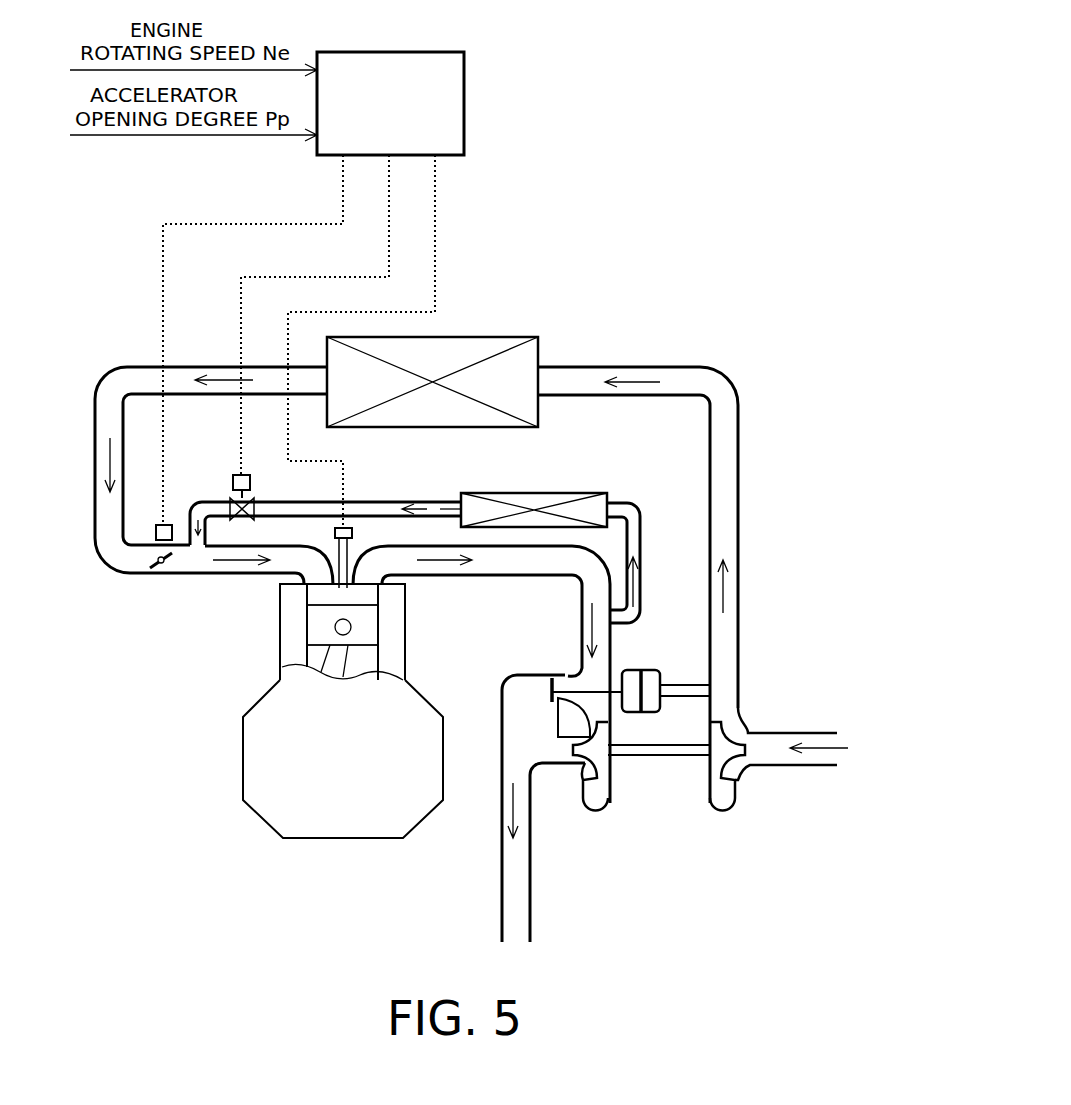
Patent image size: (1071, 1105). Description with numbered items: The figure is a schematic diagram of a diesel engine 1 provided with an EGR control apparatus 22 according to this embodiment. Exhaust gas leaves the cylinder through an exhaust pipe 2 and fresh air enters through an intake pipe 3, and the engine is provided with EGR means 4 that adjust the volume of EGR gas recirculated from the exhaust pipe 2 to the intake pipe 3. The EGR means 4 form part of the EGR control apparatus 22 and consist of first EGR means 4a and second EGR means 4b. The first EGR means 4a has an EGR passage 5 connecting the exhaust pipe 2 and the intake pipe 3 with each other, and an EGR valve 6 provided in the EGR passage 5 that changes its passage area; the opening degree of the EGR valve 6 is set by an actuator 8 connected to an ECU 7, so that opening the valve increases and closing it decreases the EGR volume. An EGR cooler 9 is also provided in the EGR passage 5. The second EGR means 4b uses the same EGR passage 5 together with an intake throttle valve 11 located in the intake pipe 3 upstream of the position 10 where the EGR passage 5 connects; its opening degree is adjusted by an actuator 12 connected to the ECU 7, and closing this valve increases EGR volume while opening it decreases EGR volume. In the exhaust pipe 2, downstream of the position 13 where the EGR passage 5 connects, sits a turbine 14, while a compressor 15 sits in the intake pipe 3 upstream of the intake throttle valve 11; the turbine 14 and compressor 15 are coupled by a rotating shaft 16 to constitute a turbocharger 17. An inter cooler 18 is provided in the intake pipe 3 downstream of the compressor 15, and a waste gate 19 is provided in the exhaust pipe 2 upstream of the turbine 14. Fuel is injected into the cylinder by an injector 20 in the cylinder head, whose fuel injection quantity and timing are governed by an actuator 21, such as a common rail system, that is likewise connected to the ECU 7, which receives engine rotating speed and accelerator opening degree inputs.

The diesel engine 1 is at (262, 755).
The exhaust pipe 2 is at (490, 577).
The intake pipe 3 is at (255, 576).
The EGR means 4 is at (188, 469).
The first EGR means 4a is at (427, 493).
The second EGR means 4b is at (103, 575).
The EGR passage 5 is at (371, 500).
The EGR valve 6 is at (233, 498).
The ECU 7 is at (432, 52).
The actuator 8 is at (252, 482).
The EGR cooler 9 is at (580, 493).
The position connected with the EGR passage 10 is at (197, 548).
The intake throttle valve 11 is at (162, 566).
The actuator 12 is at (160, 525).
The position connected with the EGR passage 13 is at (598, 620).
The turbine 14 is at (584, 774).
The compressor 15 is at (735, 774).
The rotating shaft 16 is at (656, 752).
The turbocharger 17 is at (671, 790).
The inter cooler 18 is at (506, 337).
The waste gate 19 is at (552, 682).
The injector 20 is at (352, 560).
The actuator 21 is at (335, 533).
The EGR control apparatus 22 is at (638, 127).